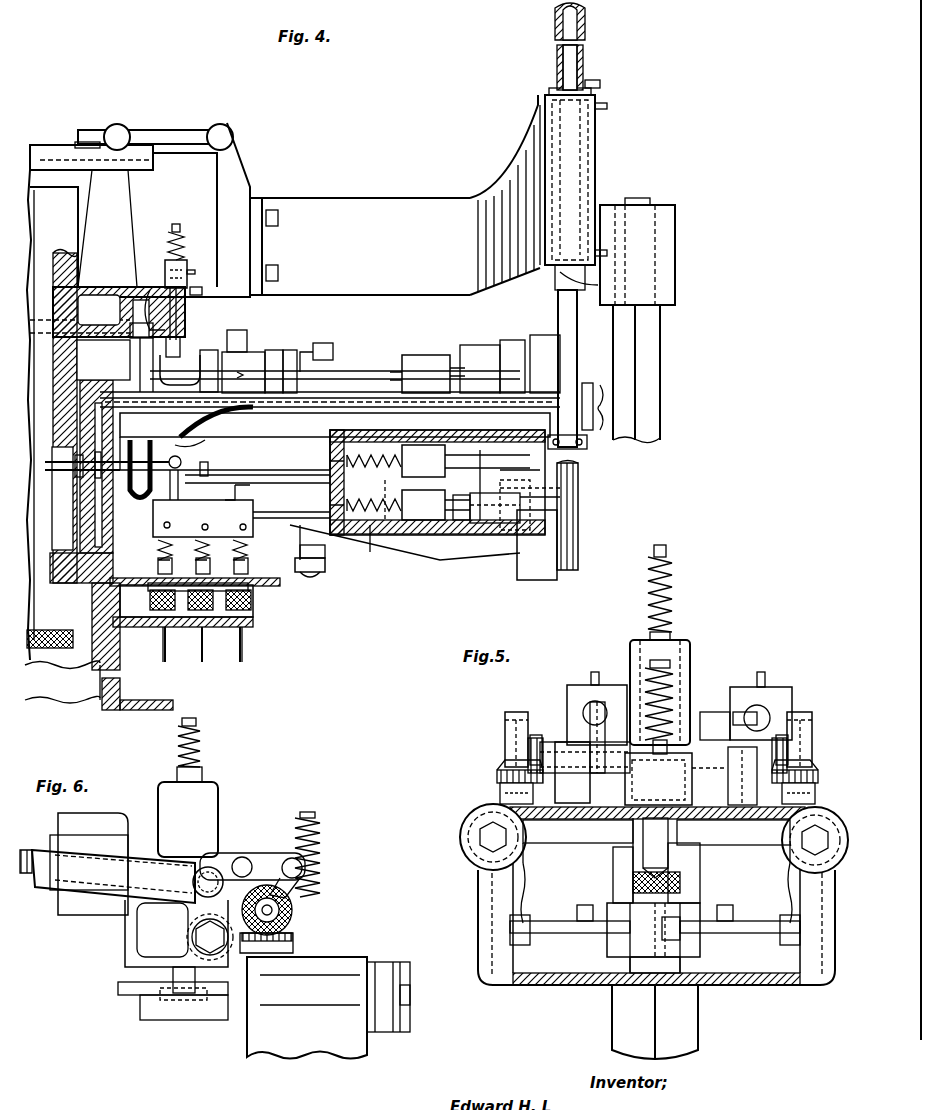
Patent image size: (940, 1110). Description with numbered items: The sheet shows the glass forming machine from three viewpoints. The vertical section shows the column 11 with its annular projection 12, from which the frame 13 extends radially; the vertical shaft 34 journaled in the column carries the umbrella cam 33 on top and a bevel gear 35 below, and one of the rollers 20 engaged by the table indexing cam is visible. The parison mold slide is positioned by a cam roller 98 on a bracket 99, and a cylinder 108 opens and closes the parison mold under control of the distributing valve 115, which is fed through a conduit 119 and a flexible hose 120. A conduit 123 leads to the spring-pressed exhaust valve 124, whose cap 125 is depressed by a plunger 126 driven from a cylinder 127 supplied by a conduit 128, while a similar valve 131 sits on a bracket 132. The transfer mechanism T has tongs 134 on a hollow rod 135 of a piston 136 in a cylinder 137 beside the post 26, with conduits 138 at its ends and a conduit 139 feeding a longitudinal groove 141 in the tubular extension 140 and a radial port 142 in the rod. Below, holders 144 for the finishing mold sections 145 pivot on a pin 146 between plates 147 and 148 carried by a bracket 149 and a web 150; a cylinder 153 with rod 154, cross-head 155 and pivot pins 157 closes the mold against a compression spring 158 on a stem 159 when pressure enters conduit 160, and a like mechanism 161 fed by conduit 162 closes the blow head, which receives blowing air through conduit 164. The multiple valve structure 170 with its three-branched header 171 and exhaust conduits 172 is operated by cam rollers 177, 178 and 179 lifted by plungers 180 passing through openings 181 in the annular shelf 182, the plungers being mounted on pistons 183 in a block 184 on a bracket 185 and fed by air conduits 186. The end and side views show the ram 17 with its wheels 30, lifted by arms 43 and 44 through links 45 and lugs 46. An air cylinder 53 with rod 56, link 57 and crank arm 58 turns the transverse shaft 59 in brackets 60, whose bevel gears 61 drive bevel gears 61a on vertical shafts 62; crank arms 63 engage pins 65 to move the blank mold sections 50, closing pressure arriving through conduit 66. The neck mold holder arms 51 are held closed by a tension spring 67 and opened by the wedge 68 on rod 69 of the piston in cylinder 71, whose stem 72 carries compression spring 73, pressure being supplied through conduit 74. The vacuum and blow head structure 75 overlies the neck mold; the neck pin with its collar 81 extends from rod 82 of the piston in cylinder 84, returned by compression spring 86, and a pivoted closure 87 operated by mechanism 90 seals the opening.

In FIG. 4, the column 11 is at (120, 688).
In FIG. 4, the annular projection 12 is at (125, 311).
In FIG. 4, the frame 13 is at (215, 195).
In FIG. 6, the ram 17 is at (285, 778).
In FIG. 4, the rollers 20 is at (315, 552).
In FIG. 4, the vertical post 26 is at (660, 322).
In FIG. 5, the wheels 30 is at (462, 834).
In FIG. 4, the umbrella cam 33 is at (50, 148).
In FIG. 4, the vertical shaft 34 is at (43, 262).
In FIG. 4, the bevel gear 35 is at (70, 670).
In FIG. 5, the arm 43 is at (505, 722).
In FIG. 5, the arm 44 is at (808, 722).
In FIG. 5, the links 45 is at (505, 741).
In FIG. 6, the links 45 is at (200, 908).
In FIG. 6, the upstanding lugs 46 is at (186, 945).
In FIG. 5, the blank mold sections 50 is at (612, 1032).
In FIG. 5, the neck mold holder arms 51 is at (700, 900).
In FIG. 5, the air cylinder 53 is at (575, 698).
In FIG. 6, the air cylinder 53 is at (85, 835).
In FIG. 6, the rod 56 is at (188, 858).
In FIG. 6, the link 57 is at (218, 856).
In FIG. 6, the crank arm 58 is at (322, 892).
In FIG. 5, the transverse shaft 59 is at (700, 760).
In FIG. 6, the transverse shaft 59 is at (292, 910).
In FIG. 5, the brackets 60 is at (548, 785).
In FIG. 5, the bevel gears 61 is at (535, 745).
In FIG. 6, the bevel gears 61 is at (292, 927).
In FIG. 5, the bevel gear 61a is at (500, 770).
In FIG. 5, the vertical shaft 62 is at (558, 866).
In FIG. 5, the crank arm 63 is at (570, 928).
In FIG. 5, the pin 65 is at (585, 945).
In FIG. 5, the conduit 66 is at (605, 662).
In FIG. 5, the tension spring 67 is at (680, 882).
In FIG. 5, the wedge 68 is at (643, 862).
In FIG. 5, the rod 69 is at (640, 832).
In FIG. 5, the cylinder 71 is at (675, 779).
In FIG. 5, the stem 72 is at (675, 690).
In FIG. 5, the compression spring 73 is at (672, 665).
In FIG. 5, the conduit 74 is at (607, 737).
In FIG. 6, the vacuum and blow head structure 75 is at (140, 1005).
In FIG. 5, the collar 81 is at (672, 562).
In FIG. 6, the collar 81 is at (170, 1000).
In FIG. 6, the rod 82 is at (175, 976).
In FIG. 5, the cylinder 84 is at (670, 660).
In FIG. 6, the cylinder 84 is at (205, 810).
In FIG. 6, the compression spring 86 is at (203, 745).
In FIG. 6, the pivoted closure 87 is at (120, 988).
In FIG. 5, the fluid pressure operated mechanism 90 is at (772, 695).
In FIG. 4, the cam roller 98 is at (140, 288).
In FIG. 4, the bracket 99 is at (128, 364).
In FIG. 4, the cylinder 108 is at (420, 362).
In FIG. 4, the distributing valve 115 is at (248, 365).
In FIG. 4, the conduit 119 is at (135, 462).
In FIG. 4, the flexible hose 120 is at (258, 423).
In FIG. 4, the conduit 123 is at (195, 390).
In FIG. 4, the exhaust valve 124 is at (183, 360).
In FIG. 4, the cap 125 is at (165, 346).
In FIG. 4, the plunger 126 is at (183, 306).
In FIG. 4, the cylinder 127 is at (178, 260).
In FIG. 4, the conduit 128 is at (192, 270).
In FIG. 4, the valve 131 is at (323, 343).
In FIG. 4, the bracket 132 is at (325, 365).
In FIG. 4, the tongs 134 is at (585, 448).
In FIG. 4, the hollow rod 135 is at (558, 320).
In FIG. 4, the piston 136 is at (553, 272).
In FIG. 4, the cylinder 137 is at (598, 138).
In FIG. 4, the conduits 138 is at (608, 106).
In FIG. 4, the conduit 139 is at (601, 84).
In FIG. 4, the tubular extension 140 is at (590, 30).
In FIG. 4, the longitudinal groove 141 is at (582, 52).
In FIG. 4, the radial port 142 is at (585, 62).
In FIG. 4, the finishing mold holders 144 is at (530, 508).
In FIG. 4, the finishing mold sections 145 is at (540, 545).
In FIG. 4, the vertical pin 146 is at (565, 495).
In FIG. 4, the plate 147 is at (505, 525).
In FIG. 4, the plate 148 is at (497, 465).
In FIG. 4, the bracket 149 is at (392, 560).
In FIG. 4, the web 150 is at (425, 480).
In FIG. 4, the cylinder 153 is at (440, 500).
In FIG. 4, the rod 154 is at (462, 522).
In FIG. 4, the cross-head 155 is at (470, 525).
In FIG. 4, the pivot pins 157 is at (560, 488).
In FIG. 4, the compression spring 158 is at (353, 532).
In FIG. 4, the stem 159 is at (385, 560).
In FIG. 4, the conduit 160 is at (320, 515).
In FIG. 4, the blow head operating mechanism 161 is at (415, 530).
In FIG. 4, the conduit 162 is at (322, 480).
In FIG. 4, the conduit 164 is at (285, 455).
In FIG. 4, the multiple valve structure 170 is at (255, 505).
In FIG. 4, the three-branched header 171 is at (235, 478).
In FIG. 4, the exhaust conduits 172 is at (163, 525).
In FIG. 4, the cam roller 177 is at (255, 567).
In FIG. 4, the cam roller 178 is at (252, 570).
In FIG. 4, the cam roller 179 is at (195, 573).
In FIG. 4, the plungers 180 is at (252, 595).
In FIG. 4, the openings 181 is at (225, 644).
In FIG. 4, the annular shelf 182 is at (180, 644).
In FIG. 4, the pistons 183 is at (255, 610).
In FIG. 4, the block 184 is at (335, 585).
In FIG. 4, the bracket 185 is at (258, 624).
In FIG. 4, the air conduits 186 is at (240, 662).
In FIG. 4, the transfer mechanism T is at (599, 406).